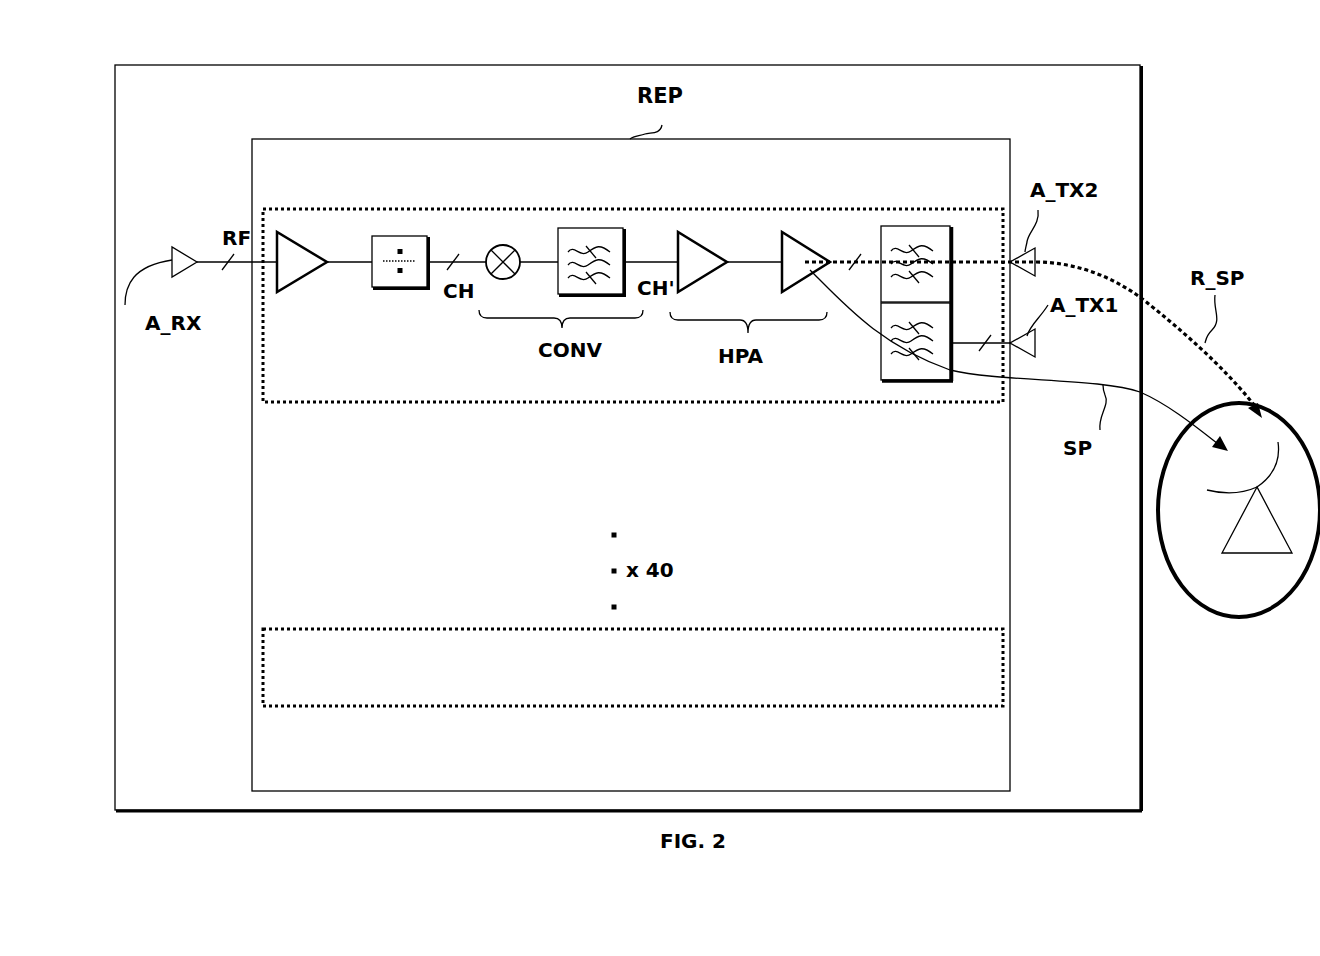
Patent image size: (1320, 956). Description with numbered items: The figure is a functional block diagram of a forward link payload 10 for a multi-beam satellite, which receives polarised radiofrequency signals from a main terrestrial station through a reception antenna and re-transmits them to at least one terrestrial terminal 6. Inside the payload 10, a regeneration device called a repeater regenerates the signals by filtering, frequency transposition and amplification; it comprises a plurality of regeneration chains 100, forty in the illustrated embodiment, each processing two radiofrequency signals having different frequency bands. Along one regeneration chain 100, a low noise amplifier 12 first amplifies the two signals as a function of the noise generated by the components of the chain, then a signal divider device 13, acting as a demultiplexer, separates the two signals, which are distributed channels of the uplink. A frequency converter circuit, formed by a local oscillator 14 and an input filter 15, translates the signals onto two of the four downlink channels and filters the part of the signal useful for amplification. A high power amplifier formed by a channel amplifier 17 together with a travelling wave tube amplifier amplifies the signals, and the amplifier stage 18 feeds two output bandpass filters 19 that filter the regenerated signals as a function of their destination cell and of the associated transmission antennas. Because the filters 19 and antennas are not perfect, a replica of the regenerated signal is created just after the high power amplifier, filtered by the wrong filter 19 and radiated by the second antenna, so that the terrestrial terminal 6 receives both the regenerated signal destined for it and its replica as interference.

The forward link payload 10 is at (625, 65).
The low noise amplifier 12 is at (297, 257).
The signal divider device 13 is at (390, 242).
The local oscillator 14 is at (503, 247).
The input filter 15 is at (585, 236).
The channel amplifier 17 is at (690, 250).
The high power amplifier 18 is at (795, 255).
The output bandpass filter 19 is at (910, 237).
The regeneration chain 100 is at (632, 402).
The terrestrial terminal 6 is at (1238, 518).